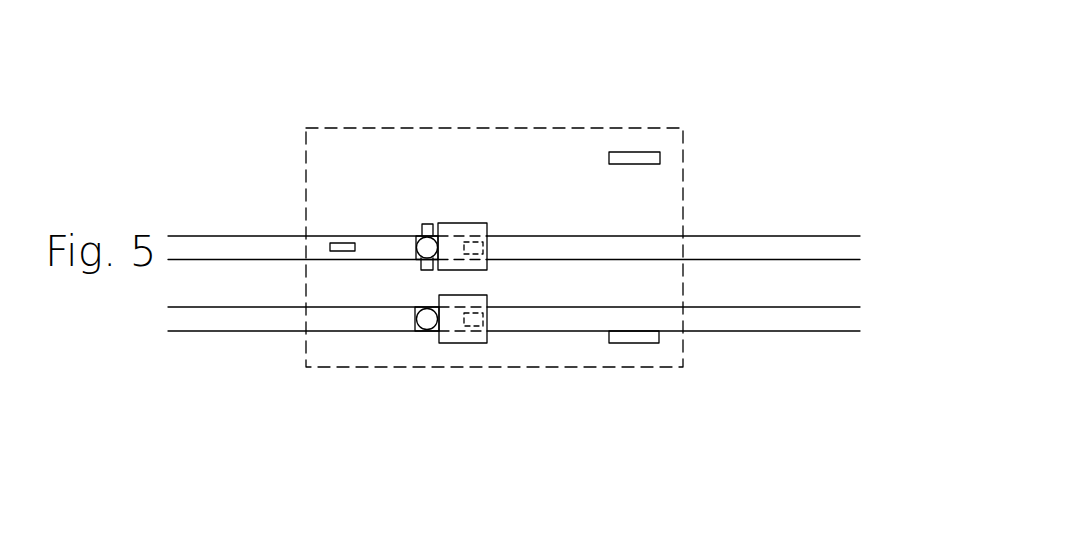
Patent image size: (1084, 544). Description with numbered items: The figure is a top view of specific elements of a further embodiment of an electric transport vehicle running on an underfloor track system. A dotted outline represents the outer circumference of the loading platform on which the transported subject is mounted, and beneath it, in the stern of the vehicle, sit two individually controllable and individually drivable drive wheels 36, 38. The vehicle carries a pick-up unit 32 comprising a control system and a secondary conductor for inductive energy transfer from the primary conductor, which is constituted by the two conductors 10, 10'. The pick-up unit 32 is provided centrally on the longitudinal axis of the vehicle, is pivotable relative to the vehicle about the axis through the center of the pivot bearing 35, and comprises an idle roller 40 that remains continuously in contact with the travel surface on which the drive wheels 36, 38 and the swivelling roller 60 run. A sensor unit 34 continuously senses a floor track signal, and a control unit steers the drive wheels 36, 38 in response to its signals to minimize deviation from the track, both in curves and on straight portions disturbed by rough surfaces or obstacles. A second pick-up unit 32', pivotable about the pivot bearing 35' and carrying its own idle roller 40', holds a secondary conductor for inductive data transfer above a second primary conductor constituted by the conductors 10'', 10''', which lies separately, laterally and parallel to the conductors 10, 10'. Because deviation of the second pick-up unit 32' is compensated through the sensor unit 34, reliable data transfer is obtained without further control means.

The conductor 10 is at (517, 201).
The conductor 10' is at (553, 275).
The conductor 10'' is at (514, 288).
The conductor 10''' is at (528, 361).
The pick-up unit 32 is at (464, 168).
The second pick-up unit 32' is at (469, 386).
The sensor unit 34 is at (427, 224).
The pivot bearing 35 is at (436, 134).
The pivot bearing 35' is at (426, 377).
The drive wheel 36 is at (645, 157).
The drive wheel 38 is at (645, 338).
The idle roller 40 is at (511, 156).
The idle roller 40' is at (512, 380).
The swivelling roller 60 is at (343, 244).